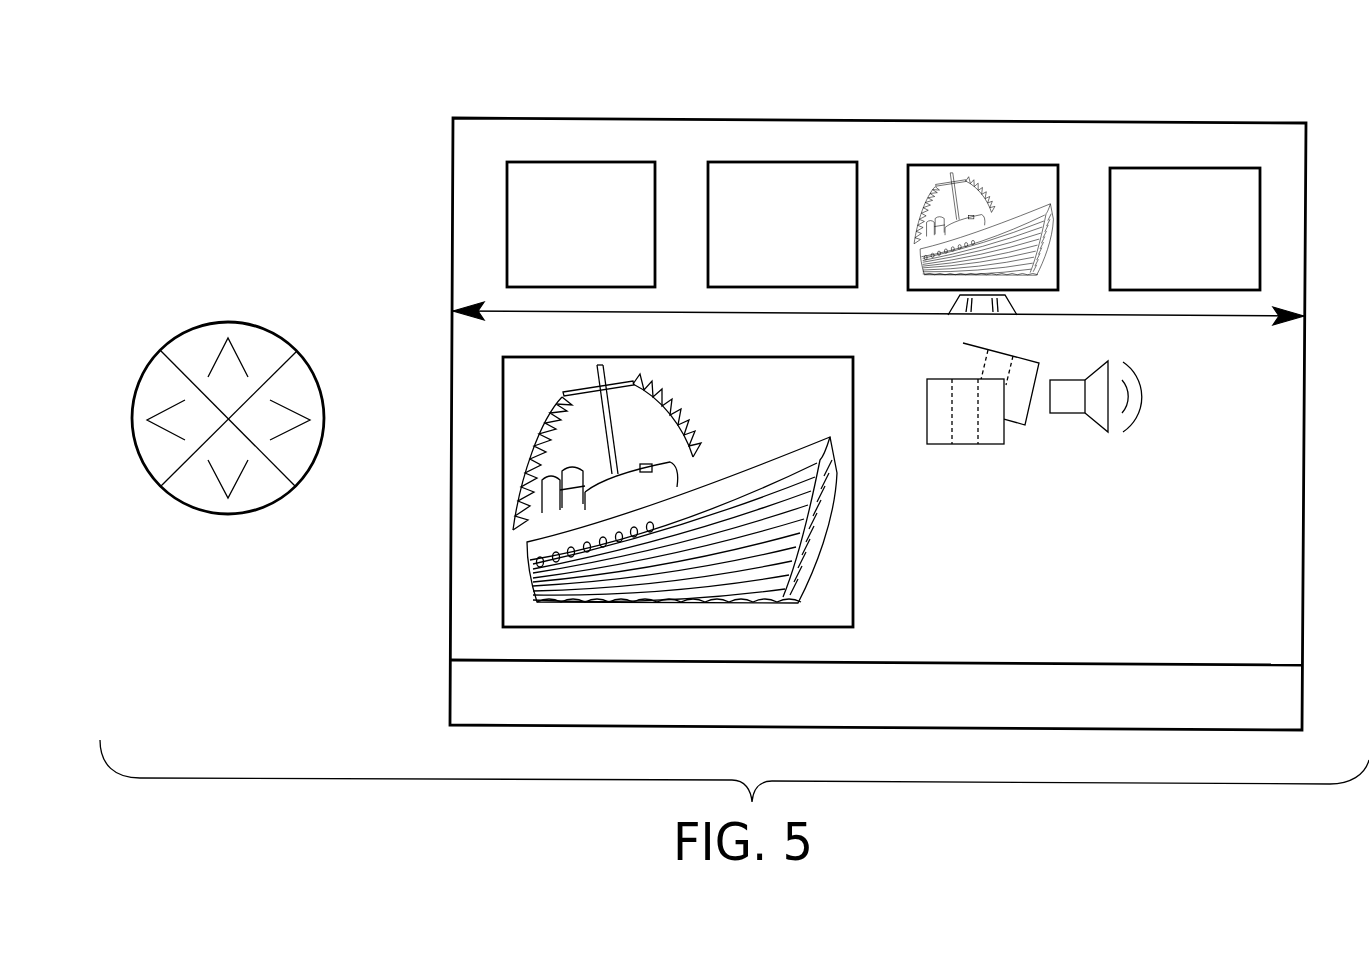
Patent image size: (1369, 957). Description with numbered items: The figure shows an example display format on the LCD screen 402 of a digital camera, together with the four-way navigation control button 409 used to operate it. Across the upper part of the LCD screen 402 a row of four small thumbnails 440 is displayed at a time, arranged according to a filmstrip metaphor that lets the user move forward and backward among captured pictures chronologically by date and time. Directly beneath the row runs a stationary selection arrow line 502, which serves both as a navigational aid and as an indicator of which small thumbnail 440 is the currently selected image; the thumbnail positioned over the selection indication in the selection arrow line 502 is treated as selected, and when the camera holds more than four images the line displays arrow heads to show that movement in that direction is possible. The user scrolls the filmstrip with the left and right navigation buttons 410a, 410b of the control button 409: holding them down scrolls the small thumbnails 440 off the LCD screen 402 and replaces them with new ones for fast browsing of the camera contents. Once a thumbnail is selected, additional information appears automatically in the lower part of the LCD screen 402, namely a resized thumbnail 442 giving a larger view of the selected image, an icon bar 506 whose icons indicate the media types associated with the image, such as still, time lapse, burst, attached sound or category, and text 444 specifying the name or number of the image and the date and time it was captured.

The LCD screen 402 is at (450, 695).
The four-way navigation control button 409 is at (231, 394).
The left navigation button 410a is at (147, 475).
The right navigation button 410b is at (308, 475).
The small thumbnails 440 is at (1165, 168).
The resized thumbnail 442 is at (503, 410).
The text 444 is at (1198, 513).
The selection arrow line 502 is at (502, 310).
The icon bar 506 is at (1198, 396).